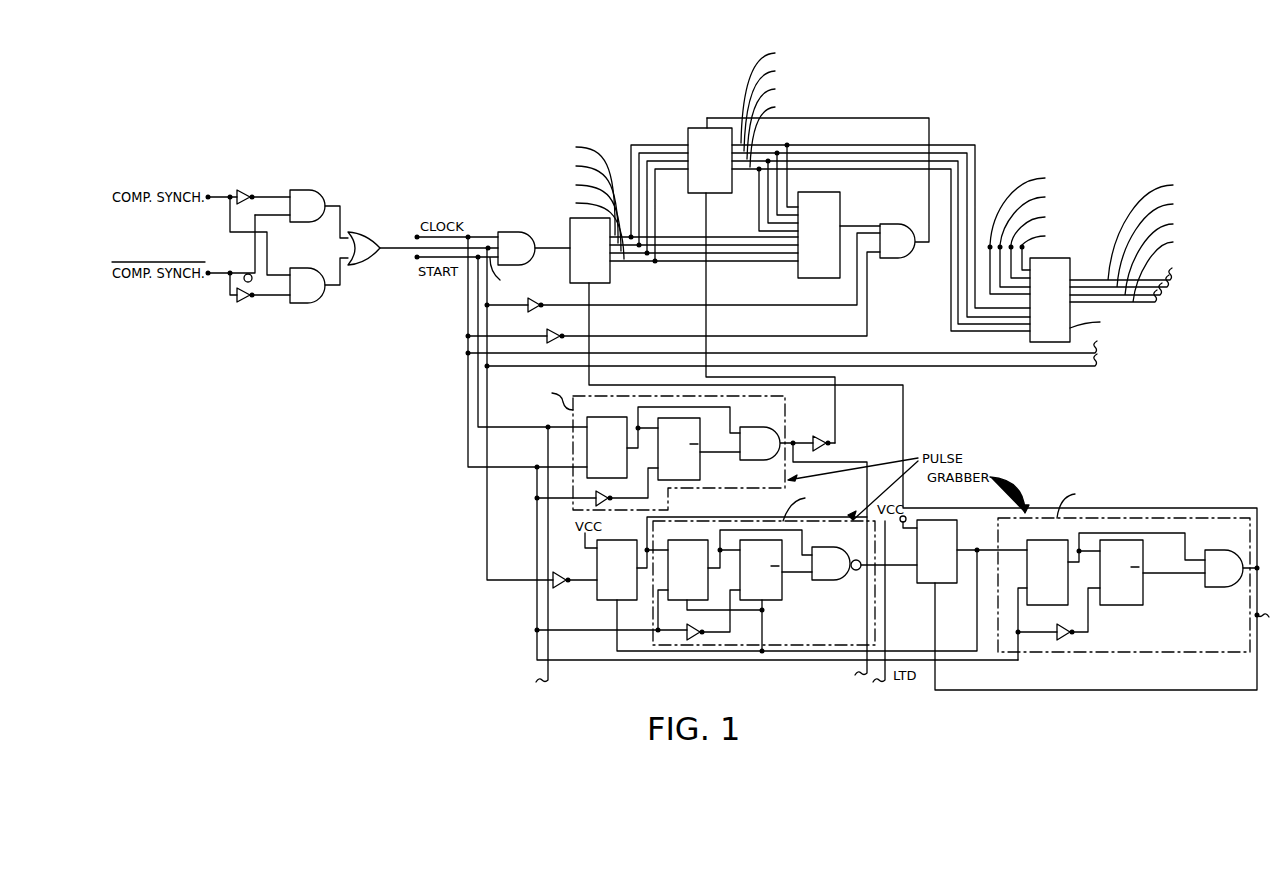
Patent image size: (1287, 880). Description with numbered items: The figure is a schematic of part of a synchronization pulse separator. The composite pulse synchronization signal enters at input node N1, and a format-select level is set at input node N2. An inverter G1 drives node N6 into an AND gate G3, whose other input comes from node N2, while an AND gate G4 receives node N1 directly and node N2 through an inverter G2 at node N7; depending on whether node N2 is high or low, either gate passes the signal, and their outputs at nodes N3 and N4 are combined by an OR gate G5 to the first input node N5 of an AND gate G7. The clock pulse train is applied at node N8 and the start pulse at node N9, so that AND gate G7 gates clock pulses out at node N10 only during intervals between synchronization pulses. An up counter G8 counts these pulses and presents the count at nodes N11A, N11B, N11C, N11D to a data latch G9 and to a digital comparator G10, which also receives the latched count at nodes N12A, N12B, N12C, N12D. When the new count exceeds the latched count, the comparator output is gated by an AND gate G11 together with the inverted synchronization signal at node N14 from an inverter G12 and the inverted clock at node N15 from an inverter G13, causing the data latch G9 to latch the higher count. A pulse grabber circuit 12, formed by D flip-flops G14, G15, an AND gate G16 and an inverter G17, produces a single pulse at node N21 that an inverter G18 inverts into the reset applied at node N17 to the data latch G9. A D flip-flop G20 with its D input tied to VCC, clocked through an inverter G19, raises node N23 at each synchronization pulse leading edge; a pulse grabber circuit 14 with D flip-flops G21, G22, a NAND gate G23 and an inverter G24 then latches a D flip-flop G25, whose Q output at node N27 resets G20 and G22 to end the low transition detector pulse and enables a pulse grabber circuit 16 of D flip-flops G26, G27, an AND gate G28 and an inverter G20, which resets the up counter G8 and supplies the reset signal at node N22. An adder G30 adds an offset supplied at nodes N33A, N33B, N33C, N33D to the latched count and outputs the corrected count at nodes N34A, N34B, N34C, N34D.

The inverter G1 is at (247, 188).
The inverter G2 is at (245, 290).
The AND gate G3 is at (307, 206).
The AND gate G4 is at (307, 285).
The OR gate G5 is at (364, 248).
The AND gate G7 is at (516, 248).
The up counter G8 is at (913, 454).
The data latch G9 is at (710, 155).
The digital comparator G10 is at (838, 226).
The AND gate G11 is at (818, 188).
The inverter G12 is at (540, 297).
The inverter G13 is at (559, 329).
The D flip-flop G14 is at (663, 442).
The D flip-flop G15 is at (699, 449).
The AND gate G16 is at (776, 443).
The inverter G17 is at (627, 487).
The inverter G18 is at (821, 435).
The inverter gate G19 is at (566, 570).
The D flip-flop G20 is at (848, 595).
The D flip-flop G21 is at (734, 581).
The D flip-flop G22 is at (776, 597).
The NAND gate G23 is at (864, 563).
The inverter G24 is at (713, 615).
The D flip-flop G25 is at (937, 551).
The D flip-flop G26 is at (1111, 596).
The D flip-flop G27 is at (1152, 572).
The AND gate G28 is at (1224, 568).
The adder G30 is at (1089, 300).
The input node N1 is at (249, 224).
The input node N2 is at (231, 255).
The node N3 is at (343, 222).
The node N4 is at (343, 271).
The first input terminal node N5 is at (738, 405).
The node N6 is at (270, 192).
The node N7 is at (270, 260).
The second input terminal node N8 is at (757, 440).
The third input terminal node N9 is at (507, 469).
The node N10 is at (552, 239).
The output count node N11A is at (670, 216).
The output count node N11B is at (670, 208).
The output count node N11C is at (670, 200).
The output count node N11D is at (670, 189).
The data latch output node N12A is at (881, 176).
The data latch output node N12B is at (881, 190).
The data latch output node N12C is at (881, 202).
The data latch output node N12D is at (881, 215).
The second input terminal node N14 is at (710, 270).
The third input terminal node N15 is at (720, 295).
The reset node N17 is at (770, 318).
The output node N21 is at (831, 563).
The output node N22 is at (926, 592).
The node N23 is at (757, 525).
The node N27 is at (992, 542).
The offset input node N33A is at (1051, 249).
The offset input node N33B is at (1046, 243).
The offset input node N33C is at (1040, 238).
The offset input node N33D is at (1036, 232).
The adder output node N34A is at (1140, 228).
The adder output node N34B is at (1140, 241).
The adder output node N34C is at (1140, 255).
The adder output node N34D is at (1140, 268).
The pulse grabber circuit 12 is at (660, 447).
The pulse grabber circuit 14 is at (764, 567).
The pulse grabber circuit 16 is at (1124, 567).